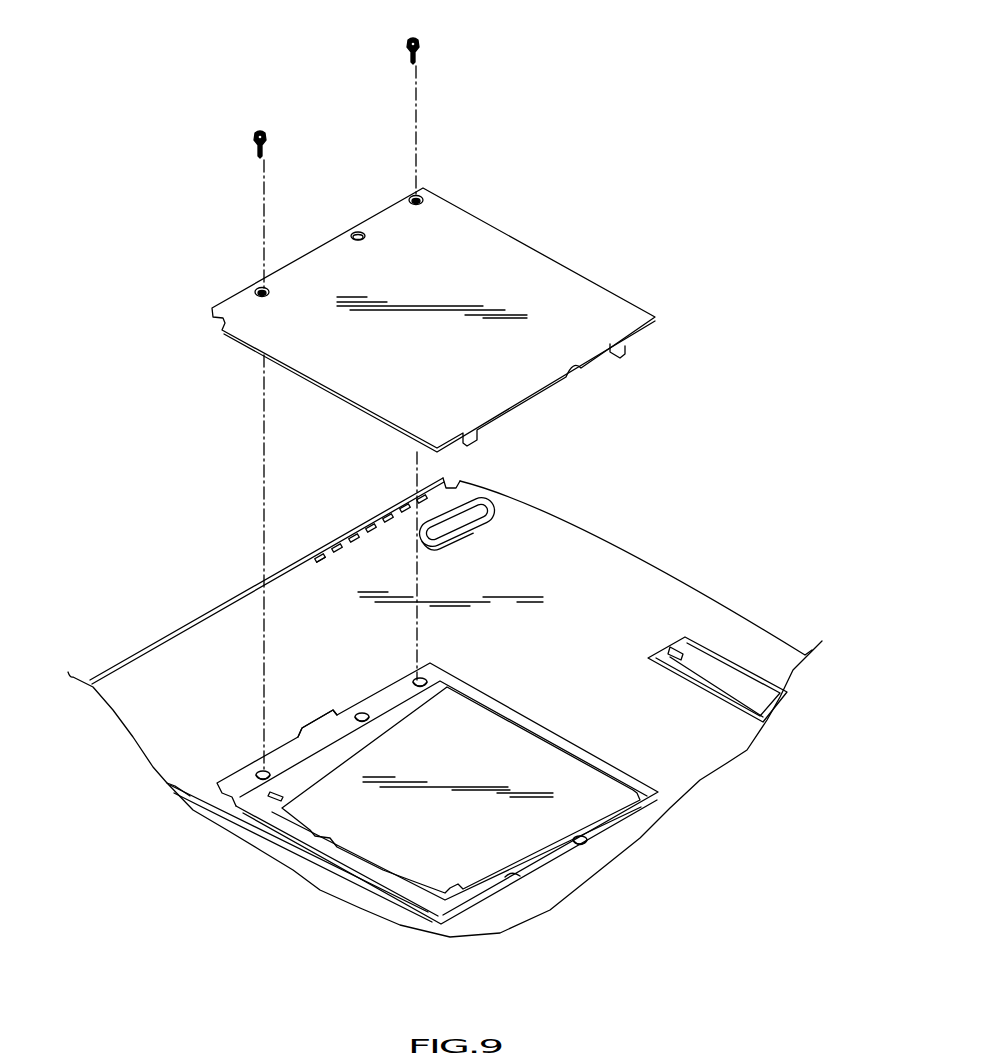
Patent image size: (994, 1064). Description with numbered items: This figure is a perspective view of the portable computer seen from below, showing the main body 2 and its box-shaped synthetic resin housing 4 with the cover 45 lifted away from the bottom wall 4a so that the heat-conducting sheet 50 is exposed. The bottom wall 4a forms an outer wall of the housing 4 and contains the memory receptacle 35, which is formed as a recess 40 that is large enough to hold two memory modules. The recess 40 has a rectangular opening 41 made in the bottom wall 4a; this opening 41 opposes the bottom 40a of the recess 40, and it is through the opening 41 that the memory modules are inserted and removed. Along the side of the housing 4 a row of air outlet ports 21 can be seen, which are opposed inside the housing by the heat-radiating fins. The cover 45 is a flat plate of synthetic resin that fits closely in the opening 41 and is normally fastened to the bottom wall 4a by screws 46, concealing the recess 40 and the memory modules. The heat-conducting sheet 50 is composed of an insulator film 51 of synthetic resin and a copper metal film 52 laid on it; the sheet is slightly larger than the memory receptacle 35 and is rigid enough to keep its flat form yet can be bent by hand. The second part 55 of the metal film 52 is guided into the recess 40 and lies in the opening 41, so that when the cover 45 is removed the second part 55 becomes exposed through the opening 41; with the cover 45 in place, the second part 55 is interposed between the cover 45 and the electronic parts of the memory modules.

The main body 2 is at (193, 615).
The housing 4 is at (640, 558).
The bottom wall 4a is at (703, 743).
The air outlet ports 21 is at (390, 498).
The memory receptacle 35 is at (347, 737).
The recess 40 is at (312, 757).
The bottom of the recess 40a is at (247, 807).
The rectangular opening 41 is at (513, 873).
The cover 45 is at (587, 285).
The screws 46 is at (263, 135).
The heat-conducting sheet 50 is at (383, 970).
The insulator film 51 is at (380, 872).
The metal film 52 is at (418, 870).
The second part 55 is at (525, 743).